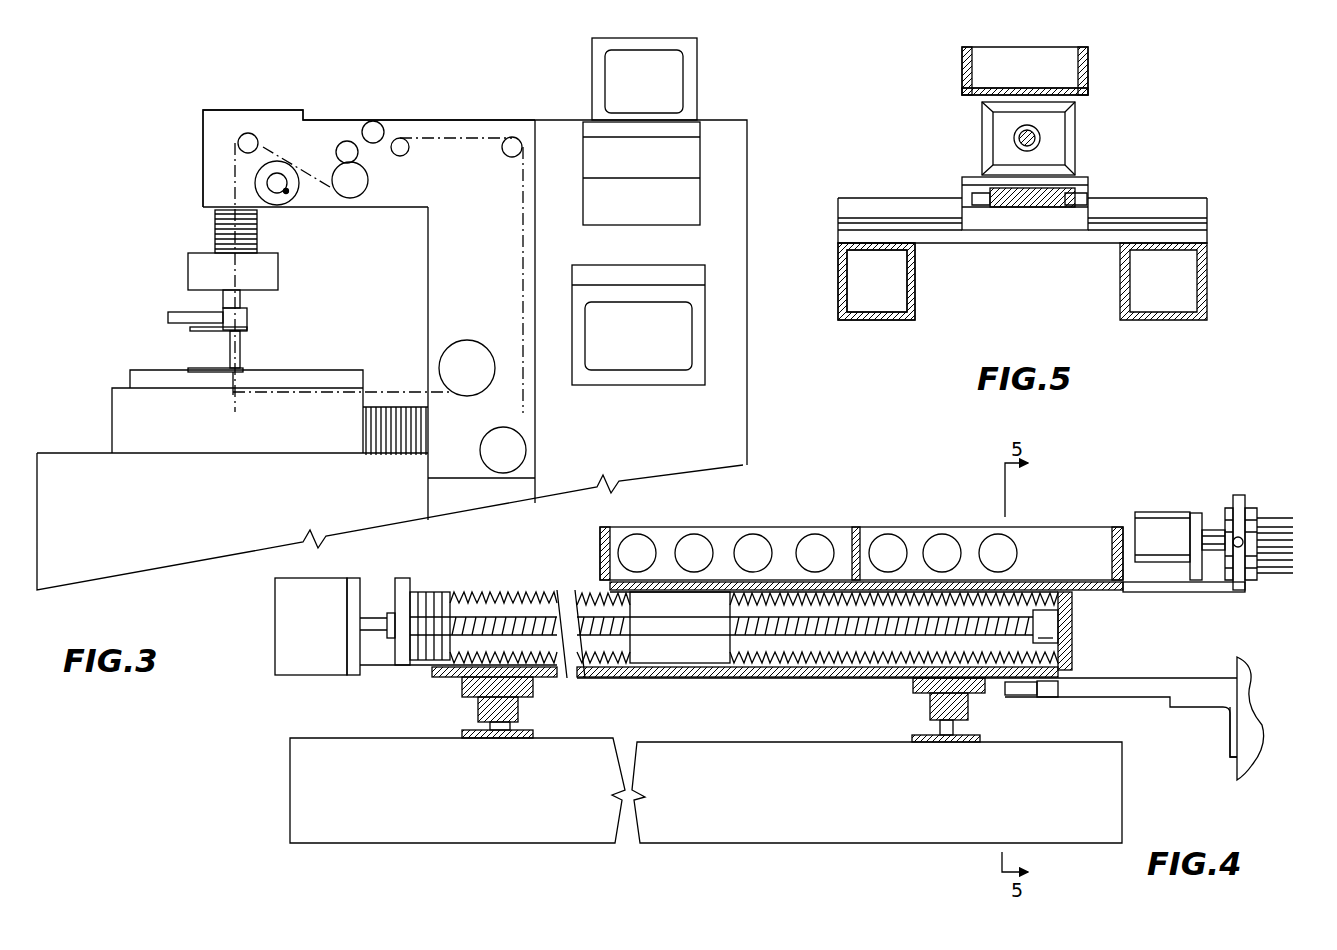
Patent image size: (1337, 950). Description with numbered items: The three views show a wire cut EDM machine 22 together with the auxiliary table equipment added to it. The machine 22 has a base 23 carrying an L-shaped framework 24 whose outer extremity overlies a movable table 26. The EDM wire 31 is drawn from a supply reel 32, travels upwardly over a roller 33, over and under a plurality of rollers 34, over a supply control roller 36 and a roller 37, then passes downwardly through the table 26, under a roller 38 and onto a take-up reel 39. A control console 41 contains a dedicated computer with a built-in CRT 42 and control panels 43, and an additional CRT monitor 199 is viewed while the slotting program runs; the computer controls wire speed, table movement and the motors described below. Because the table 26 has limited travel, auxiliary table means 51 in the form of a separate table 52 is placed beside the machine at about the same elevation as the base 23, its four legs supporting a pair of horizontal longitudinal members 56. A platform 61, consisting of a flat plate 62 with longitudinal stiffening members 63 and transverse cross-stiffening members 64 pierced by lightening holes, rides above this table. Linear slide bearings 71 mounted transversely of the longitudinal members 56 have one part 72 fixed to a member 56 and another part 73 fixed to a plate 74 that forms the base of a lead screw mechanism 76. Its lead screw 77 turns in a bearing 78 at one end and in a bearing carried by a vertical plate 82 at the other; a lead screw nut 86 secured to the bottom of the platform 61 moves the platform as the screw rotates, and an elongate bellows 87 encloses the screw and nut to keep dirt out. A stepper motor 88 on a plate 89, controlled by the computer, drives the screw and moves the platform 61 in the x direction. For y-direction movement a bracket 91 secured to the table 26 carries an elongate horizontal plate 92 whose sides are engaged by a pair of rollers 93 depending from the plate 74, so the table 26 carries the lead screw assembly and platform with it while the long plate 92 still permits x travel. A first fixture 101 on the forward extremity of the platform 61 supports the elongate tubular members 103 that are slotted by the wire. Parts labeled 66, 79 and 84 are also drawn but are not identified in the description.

In FIG. 3, the wire cut EDM machine 22 is at (467, 112).
In FIG. 3, the base 23 is at (390, 521).
In FIG. 5, the base 23 is at (838, 295).
In FIG. 3, the L-shaped framework 24 is at (420, 120).
In FIG. 3, the table 26 is at (122, 420).
In FIG. 4, the table 26 is at (1230, 765).
In FIG. 5, the table 26 is at (1195, 200).
In FIG. 3, the wire 31 is at (243, 340).
In FIG. 3, the supply reel 32 is at (513, 447).
In FIG. 3, the roller 33 is at (515, 139).
In FIG. 3, the rollers 34 is at (398, 143).
In FIG. 3, the supply control roller 36 is at (358, 190).
In FIG. 3, the roller 37 is at (248, 133).
In FIG. 3, the roller 38 is at (250, 383).
In FIG. 3, the take-up reel 39 is at (447, 367).
In FIG. 3, the control console 41 is at (740, 193).
In FIG. 3, the CRT 42 is at (638, 325).
In FIG. 3, the control panels 43 is at (641, 173).
In FIG. 3, the CRT monitor 199 is at (644, 79).
In FIG. 4, the auxiliary table means 51 is at (525, 590).
In FIG. 4, the separate table 52 is at (280, 775).
In FIG. 4, the longitudinal members 56 is at (877, 792).
In FIG. 4, the platform 61 is at (836, 533).
In FIG. 4, the flat plate 62 is at (860, 537).
In FIG. 5, the flat plate 62 is at (970, 95).
In FIG. 4, the stiffening members 63 is at (815, 545).
In FIG. 4, the cross-stiffening members 64 is at (600, 545).
In FIG. 5, the cross-stiffening members 64 is at (962, 72).
In FIG. 4, the hole 66 is at (812, 540).
In FIG. 4, the linear slide bearings 71 is at (476, 710).
In FIG. 4, the one part of linear slide bearing 72 is at (522, 730).
In FIG. 4, the other part of linear slide bearing 73 is at (468, 697).
In FIG. 4, the plate 74 is at (730, 680).
In FIG. 5, the plate 74 is at (962, 180).
In FIG. 4, the lead screw mechanism 76 is at (488, 590).
In FIG. 4, the lead screw 77 is at (580, 590).
In FIG. 5, the lead screw 77 is at (1040, 138).
In FIG. 4, the bearing 78 is at (1050, 612).
In FIG. 4, the end wall 79 is at (1070, 640).
In FIG. 4, the vertical plate 82 is at (403, 578).
In FIG. 5, the nut housing 84 is at (1078, 120).
In FIG. 4, the lead screw nut 86 is at (680, 627).
In FIG. 4, the bellows 87 is at (790, 680).
In FIG. 4, the stepper motor 88 is at (311, 626).
In FIG. 4, the plate 89 is at (358, 590).
In FIG. 4, the bracket 91 is at (1230, 735).
In FIG. 5, the bracket 91 is at (1010, 222).
In FIG. 4, the elongate plate 92 is at (1170, 678).
In FIG. 5, the elongate plate 92 is at (1043, 207).
In FIG. 4, the rollers 93 is at (1050, 697).
In FIG. 5, the rollers 93 is at (1088, 203).
In FIG. 4, the first fixture 101 is at (1240, 495).
In FIG. 4, the tubular members 103 is at (1272, 540).